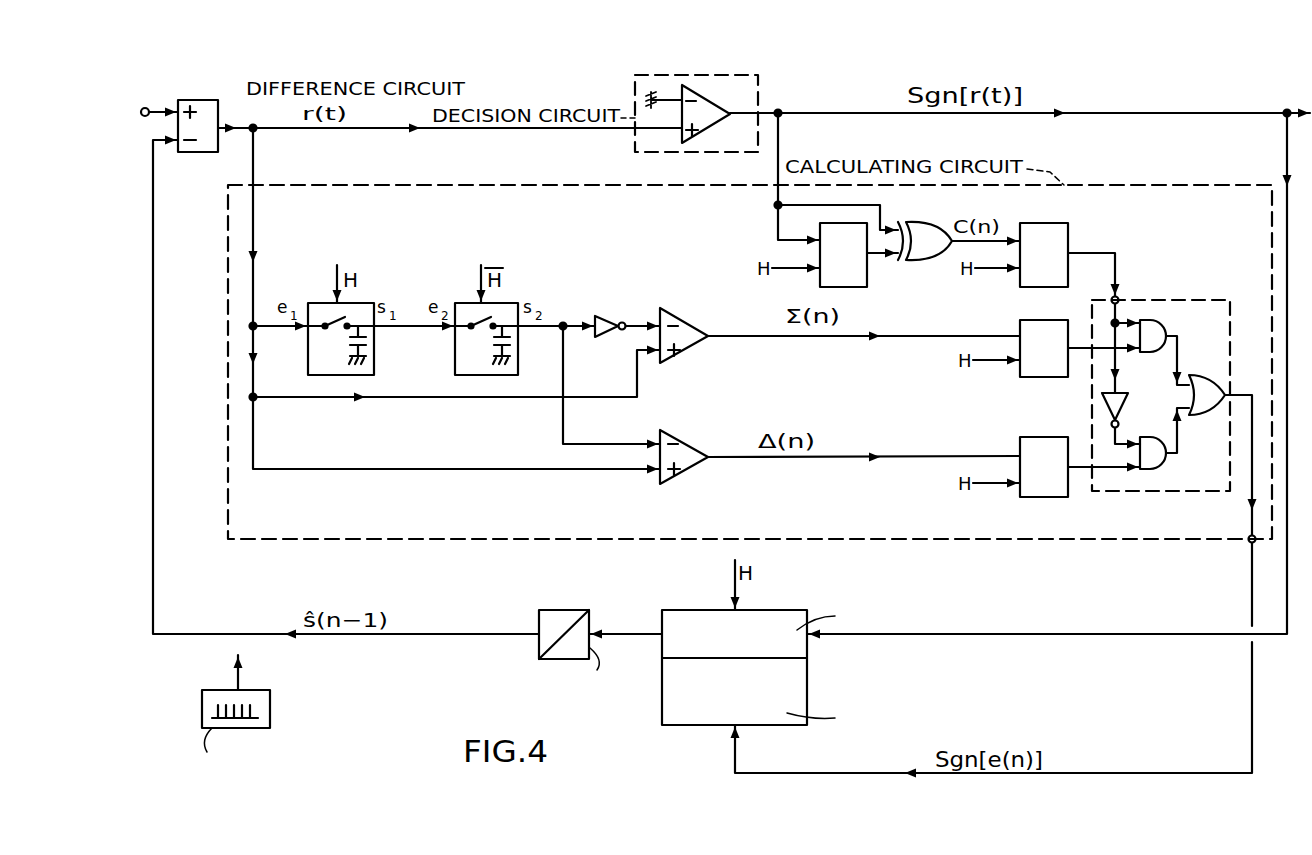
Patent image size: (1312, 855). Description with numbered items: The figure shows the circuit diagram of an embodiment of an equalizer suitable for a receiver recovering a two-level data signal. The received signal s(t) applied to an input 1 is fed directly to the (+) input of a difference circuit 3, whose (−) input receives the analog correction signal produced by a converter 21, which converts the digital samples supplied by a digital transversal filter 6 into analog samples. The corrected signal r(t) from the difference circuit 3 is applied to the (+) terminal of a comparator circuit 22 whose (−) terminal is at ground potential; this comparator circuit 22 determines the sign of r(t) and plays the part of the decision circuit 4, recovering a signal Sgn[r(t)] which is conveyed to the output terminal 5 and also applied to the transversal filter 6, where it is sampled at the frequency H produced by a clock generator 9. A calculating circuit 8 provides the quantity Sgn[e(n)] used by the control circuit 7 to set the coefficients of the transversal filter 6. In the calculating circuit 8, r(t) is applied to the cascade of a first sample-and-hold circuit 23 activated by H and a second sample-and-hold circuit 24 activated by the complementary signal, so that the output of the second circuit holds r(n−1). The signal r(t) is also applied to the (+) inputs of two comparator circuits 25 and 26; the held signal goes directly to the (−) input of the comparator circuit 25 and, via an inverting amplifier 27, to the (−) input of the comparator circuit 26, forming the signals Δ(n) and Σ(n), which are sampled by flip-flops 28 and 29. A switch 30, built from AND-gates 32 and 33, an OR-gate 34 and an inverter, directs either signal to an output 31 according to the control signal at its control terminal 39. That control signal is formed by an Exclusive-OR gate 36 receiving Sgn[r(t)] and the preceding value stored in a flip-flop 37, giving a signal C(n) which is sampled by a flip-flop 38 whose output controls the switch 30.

The input 1 is at (142, 109).
The difference circuit 3 is at (246, 86).
The decision circuit 4 is at (760, 100).
The comparator circuit 22 is at (708, 112).
The output terminal 5 is at (1295, 101).
The calculating circuit 8 is at (1113, 185).
The first sample-and-hold circuit 23 is at (358, 303).
The second sample-and-hold circuit 24 is at (505, 303).
The inverting amplifier 27 is at (605, 317).
The comparator circuit 26 is at (693, 320).
The comparator circuit 25 is at (700, 450).
The Exclusive-OR gate 36 is at (914, 232).
The flip-flop 37 is at (852, 275).
The flip-flop 38 is at (1058, 223).
The control terminal 39 is at (1118, 297).
The switch 30 is at (1218, 300).
The flip-flop 29 is at (1045, 320).
The AND-gate 33 is at (1160, 312).
The OR-gate 34 is at (1214, 375).
The flip-flop 28 is at (1040, 437).
The AND-gate 32 is at (1158, 462).
The output 31 is at (1247, 542).
The converter 21 is at (568, 610).
The transversal filter 6 is at (782, 610).
The control circuit 7 is at (820, 708).
The clock generator 9 is at (270, 712).